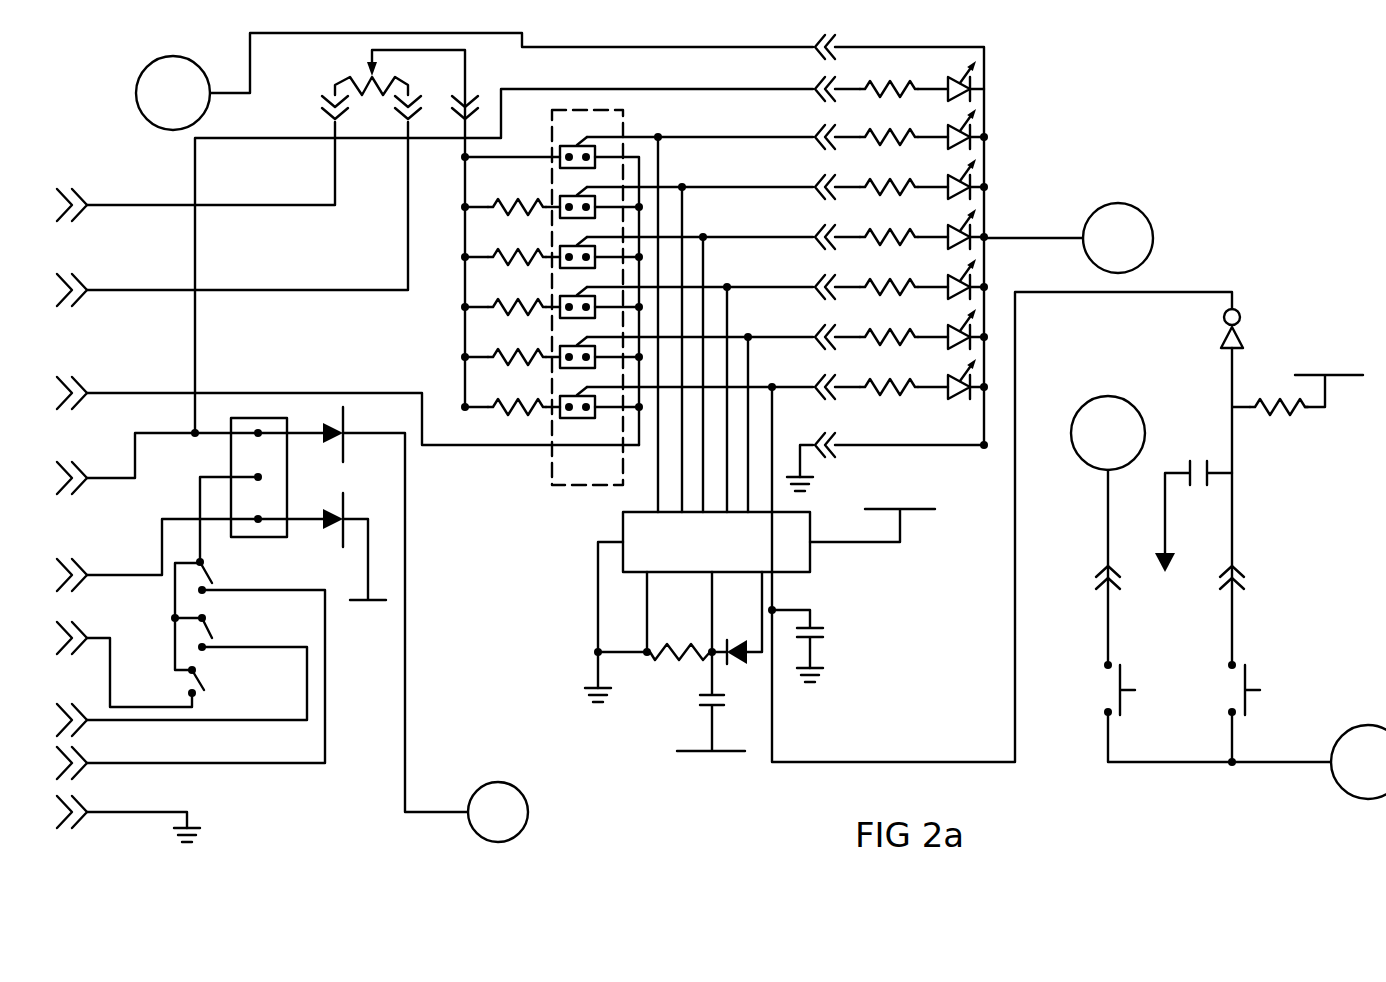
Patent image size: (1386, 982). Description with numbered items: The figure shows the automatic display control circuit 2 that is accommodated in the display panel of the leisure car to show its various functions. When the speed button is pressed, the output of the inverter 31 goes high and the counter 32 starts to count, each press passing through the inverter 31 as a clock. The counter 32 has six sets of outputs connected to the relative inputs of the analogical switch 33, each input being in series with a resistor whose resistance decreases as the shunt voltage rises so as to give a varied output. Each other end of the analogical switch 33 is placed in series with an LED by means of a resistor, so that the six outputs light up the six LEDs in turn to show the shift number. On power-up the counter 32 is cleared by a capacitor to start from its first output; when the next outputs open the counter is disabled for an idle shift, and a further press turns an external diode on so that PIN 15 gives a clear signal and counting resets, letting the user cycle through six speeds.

The automatic display control circuit 2 is at (721, 447).
The PIN 15 is at (677, 612).
The inverter 31 is at (1214, 326).
The counter 32 is at (716, 542).
The analogical switch 33 is at (598, 495).